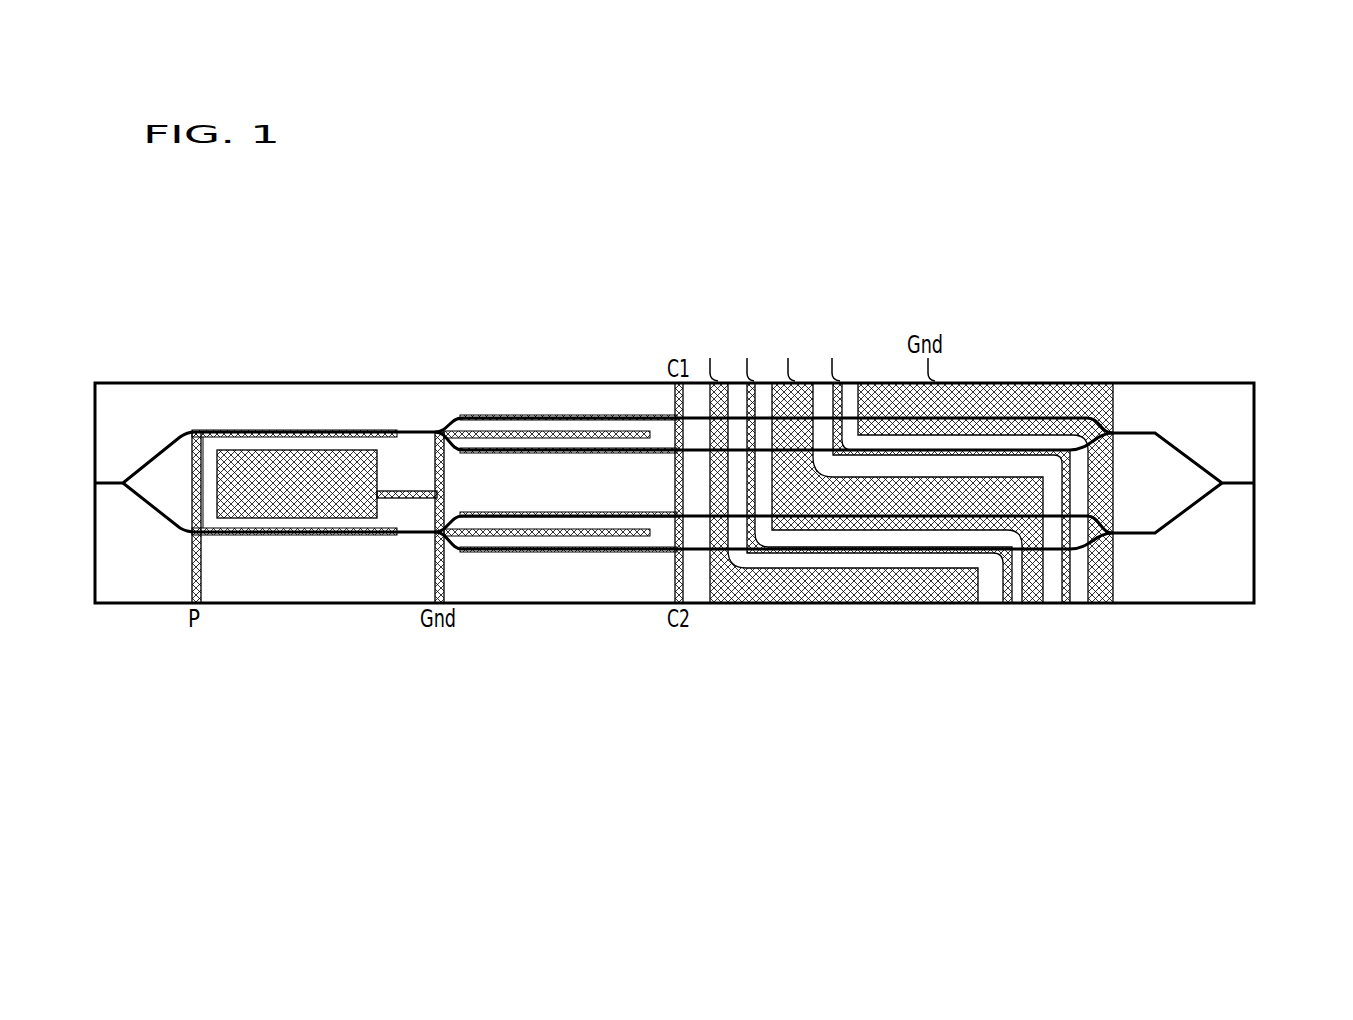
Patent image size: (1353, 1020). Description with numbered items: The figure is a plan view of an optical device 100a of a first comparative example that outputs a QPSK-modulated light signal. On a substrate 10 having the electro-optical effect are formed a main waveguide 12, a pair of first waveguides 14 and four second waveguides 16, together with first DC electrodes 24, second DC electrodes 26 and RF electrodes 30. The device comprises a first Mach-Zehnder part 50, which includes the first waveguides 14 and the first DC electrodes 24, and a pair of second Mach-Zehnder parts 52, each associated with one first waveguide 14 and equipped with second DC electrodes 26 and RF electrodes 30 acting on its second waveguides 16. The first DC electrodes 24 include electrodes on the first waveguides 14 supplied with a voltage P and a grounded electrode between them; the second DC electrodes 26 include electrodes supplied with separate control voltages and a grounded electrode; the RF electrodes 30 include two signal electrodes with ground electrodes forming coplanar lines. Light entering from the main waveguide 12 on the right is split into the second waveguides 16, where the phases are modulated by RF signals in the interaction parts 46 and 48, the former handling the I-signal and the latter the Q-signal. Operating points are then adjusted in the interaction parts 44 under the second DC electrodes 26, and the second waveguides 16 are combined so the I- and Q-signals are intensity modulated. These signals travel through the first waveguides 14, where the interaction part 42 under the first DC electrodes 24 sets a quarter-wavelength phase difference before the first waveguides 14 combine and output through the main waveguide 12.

The substrate 10 is at (1254, 565).
The main waveguide 12 is at (108, 482).
The first waveguides 14 is at (330, 431).
The second waveguides 16 is at (640, 416).
The first DC electrodes 24 is at (237, 528).
The second DC electrodes 26 is at (520, 447).
The RF electrodes 30 is at (848, 323).
The interaction part 42 is at (377, 543).
The interaction parts 44 is at (638, 459).
The interaction part 46 is at (1063, 456).
The interaction part 48 is at (975, 551).
The first Mach-Zehnder part 50 is at (410, 705).
The second Mach-Zehnder parts 52 is at (1125, 705).
The optical device 100a is at (1062, 308).